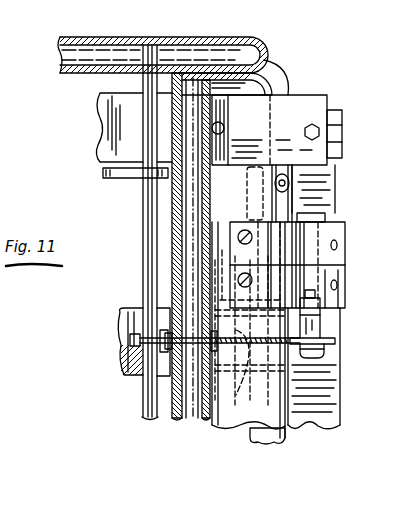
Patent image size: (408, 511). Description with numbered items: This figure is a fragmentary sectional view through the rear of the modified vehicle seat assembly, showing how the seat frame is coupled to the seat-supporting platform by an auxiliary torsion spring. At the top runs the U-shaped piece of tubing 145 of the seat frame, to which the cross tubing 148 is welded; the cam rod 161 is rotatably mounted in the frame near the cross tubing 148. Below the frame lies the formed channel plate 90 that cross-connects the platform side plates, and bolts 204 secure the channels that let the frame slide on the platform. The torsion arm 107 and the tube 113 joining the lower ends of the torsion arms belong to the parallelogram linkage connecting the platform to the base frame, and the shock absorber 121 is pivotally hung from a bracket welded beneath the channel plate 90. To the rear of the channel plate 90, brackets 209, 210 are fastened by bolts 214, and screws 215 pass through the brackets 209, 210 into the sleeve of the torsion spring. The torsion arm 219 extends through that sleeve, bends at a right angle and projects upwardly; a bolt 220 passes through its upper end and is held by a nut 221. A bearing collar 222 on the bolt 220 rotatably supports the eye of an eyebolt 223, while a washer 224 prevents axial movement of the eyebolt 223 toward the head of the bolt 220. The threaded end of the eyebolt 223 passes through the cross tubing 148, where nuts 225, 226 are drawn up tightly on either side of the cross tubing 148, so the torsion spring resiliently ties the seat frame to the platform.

The U-shaped piece of tubing 145 is at (183, 37).
The torsion arm 107 is at (278, 78).
The formed channel plate 90 is at (264, 130).
The bolts 204 is at (222, 125).
The cross tubing 148 is at (172, 222).
The cam rod 161 is at (143, 262).
The shock absorber 121 is at (120, 323).
The eyebolt 223 is at (133, 340).
The nut 226 is at (166, 347).
The bolts 214 is at (238, 280).
The torsion arm 219 is at (312, 213).
The bracket 209 is at (330, 232).
The screws 215 is at (340, 246).
The bracket 210 is at (345, 309).
The nut 221 is at (316, 317).
The bearing collar 222 is at (321, 340).
The bolt 220 is at (305, 359).
The washer 224 is at (334, 352).
The nut 225 is at (230, 380).
The tube 113 is at (278, 443).